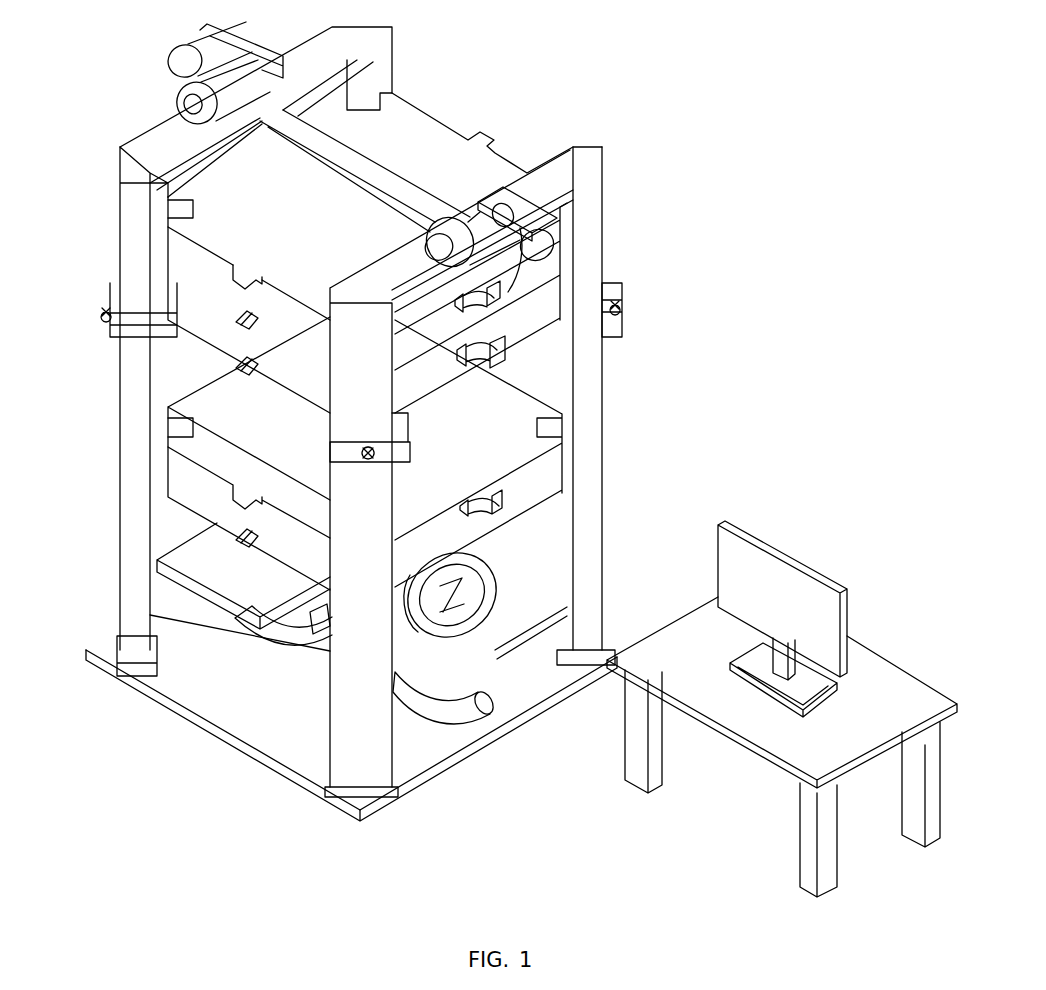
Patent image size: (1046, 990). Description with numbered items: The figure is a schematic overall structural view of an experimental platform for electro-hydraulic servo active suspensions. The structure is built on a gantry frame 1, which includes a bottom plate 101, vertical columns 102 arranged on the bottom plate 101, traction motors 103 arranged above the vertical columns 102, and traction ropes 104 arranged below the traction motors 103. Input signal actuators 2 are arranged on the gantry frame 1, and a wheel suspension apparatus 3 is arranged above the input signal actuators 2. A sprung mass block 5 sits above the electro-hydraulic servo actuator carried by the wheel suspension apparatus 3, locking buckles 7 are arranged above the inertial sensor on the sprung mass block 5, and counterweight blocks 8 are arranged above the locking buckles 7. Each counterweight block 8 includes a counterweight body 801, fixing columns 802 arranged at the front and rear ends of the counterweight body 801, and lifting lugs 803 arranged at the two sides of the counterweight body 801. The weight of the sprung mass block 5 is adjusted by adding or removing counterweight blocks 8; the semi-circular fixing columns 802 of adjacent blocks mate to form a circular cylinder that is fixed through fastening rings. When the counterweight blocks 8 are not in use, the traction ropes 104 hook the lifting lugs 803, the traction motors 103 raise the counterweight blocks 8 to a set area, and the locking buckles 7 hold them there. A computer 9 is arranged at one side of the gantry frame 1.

The gantry frame 1 is at (331, 720).
The bottom plate 101 is at (270, 743).
The vertical column 102 is at (120, 147).
The traction motor 103 is at (213, 97).
The traction rope 104 is at (505, 345).
The input signal actuator 2 is at (262, 618).
The wheel suspension apparatus 3 is at (412, 592).
The sprung mass block 5 is at (210, 480).
The locking buckle 7 is at (110, 315).
The counterweight block 8 is at (404, 328).
The counterweight body 801 is at (233, 281).
The fixing column 802 is at (247, 317).
The lifting lug 803 is at (465, 318).
The computer 9 is at (828, 618).